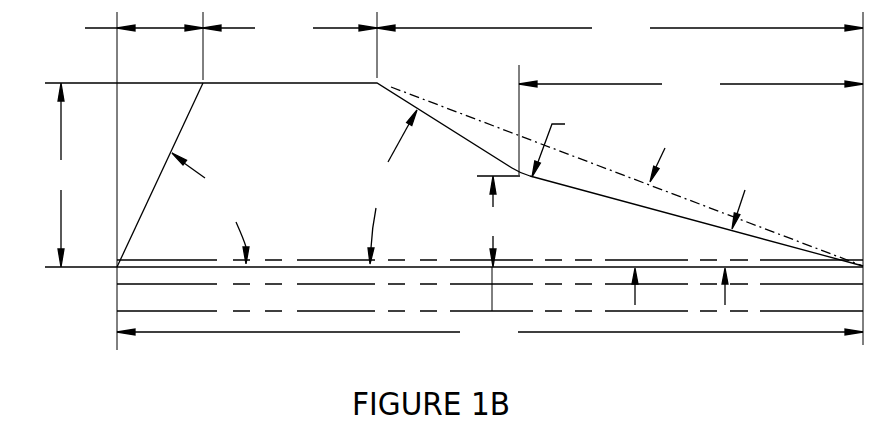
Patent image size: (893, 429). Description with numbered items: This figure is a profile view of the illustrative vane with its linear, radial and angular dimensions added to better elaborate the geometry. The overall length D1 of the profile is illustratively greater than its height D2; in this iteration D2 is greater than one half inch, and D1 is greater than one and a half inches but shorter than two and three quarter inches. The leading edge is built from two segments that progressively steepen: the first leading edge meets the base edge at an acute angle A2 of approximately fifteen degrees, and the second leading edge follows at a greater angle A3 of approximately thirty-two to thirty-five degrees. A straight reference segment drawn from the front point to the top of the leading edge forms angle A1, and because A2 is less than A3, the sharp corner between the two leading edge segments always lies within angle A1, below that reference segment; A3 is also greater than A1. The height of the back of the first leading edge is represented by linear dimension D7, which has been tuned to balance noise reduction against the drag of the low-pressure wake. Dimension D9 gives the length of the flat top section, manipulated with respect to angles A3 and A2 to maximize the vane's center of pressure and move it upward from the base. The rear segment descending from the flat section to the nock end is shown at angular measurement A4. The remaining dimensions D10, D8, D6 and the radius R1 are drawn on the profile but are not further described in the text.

The width of first sloped section D10 is at (141, 28).
The length of the top flat section D9 is at (397, 28).
The width of second sloped section D8 is at (620, 29).
The length of lower sloped section D6 is at (691, 85).
The height D2 is at (60, 175).
The height of the back of the first leading edge D7 is at (498, 221).
The length D1 is at (490, 339).
The fillet radius at knee R1 is at (569, 145).
The angle of the straight reference segment A1 is at (640, 226).
The angle of the first leading edge segment A2 is at (729, 247).
The angle of the second leading edge segment A3 is at (390, 187).
The angle of the back segment A4 is at (210, 208).